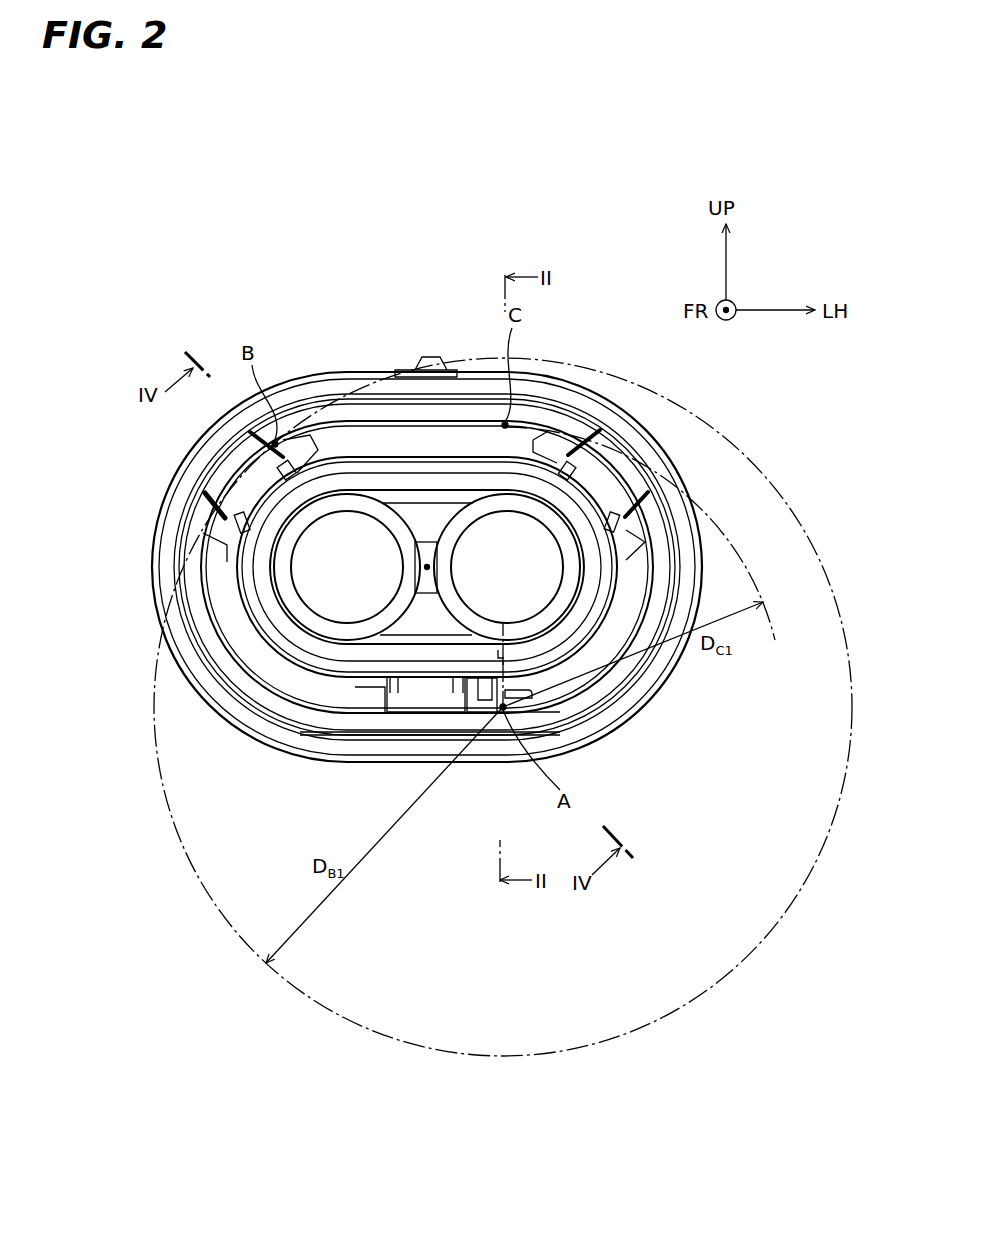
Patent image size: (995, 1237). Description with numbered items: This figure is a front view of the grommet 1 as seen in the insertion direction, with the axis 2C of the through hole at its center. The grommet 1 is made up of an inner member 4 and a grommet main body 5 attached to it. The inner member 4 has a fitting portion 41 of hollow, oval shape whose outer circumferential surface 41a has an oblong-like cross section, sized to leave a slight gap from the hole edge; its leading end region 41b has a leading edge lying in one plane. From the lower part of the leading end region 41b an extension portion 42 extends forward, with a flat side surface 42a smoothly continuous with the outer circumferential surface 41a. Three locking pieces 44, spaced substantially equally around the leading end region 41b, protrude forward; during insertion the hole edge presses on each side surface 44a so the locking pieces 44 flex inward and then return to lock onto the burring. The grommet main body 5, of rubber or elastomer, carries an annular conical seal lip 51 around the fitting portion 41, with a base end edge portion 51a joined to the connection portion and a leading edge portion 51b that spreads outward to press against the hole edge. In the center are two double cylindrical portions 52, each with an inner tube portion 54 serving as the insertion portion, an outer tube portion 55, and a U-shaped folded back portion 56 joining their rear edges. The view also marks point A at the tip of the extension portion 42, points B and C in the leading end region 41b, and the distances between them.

The grommet 1 is at (248, 262).
The axis of the through hole 2C is at (422, 567).
The inner member 4 is at (200, 592).
The grommet main body 5 is at (657, 699).
The fitting portion 41 is at (262, 675).
The outer circumferential surface 41a is at (222, 655).
The leading end region 41b is at (298, 690).
The extension portion 42 is at (478, 702).
The side surface 42a is at (488, 712).
The locking piece 44 is at (600, 470).
The side surface 44a is at (620, 445).
The seal lip 51 is at (632, 720).
The base end edge portion 51a is at (615, 672).
The leading edge portion 51b is at (600, 737).
The double cylindrical portion 52 is at (412, 297).
The inner tube portion 54 is at (397, 503).
The outer tube portion 55 is at (328, 485).
The folded back portion 56 is at (367, 485).